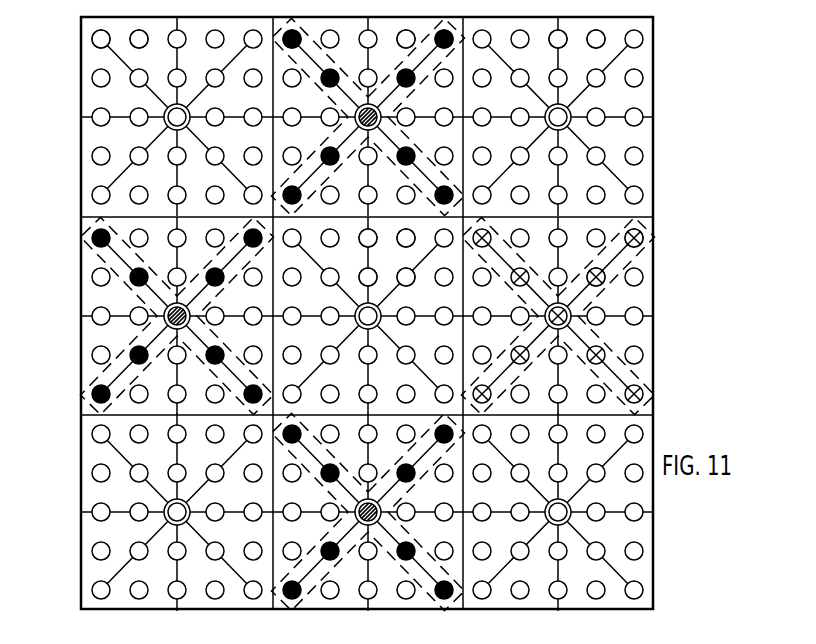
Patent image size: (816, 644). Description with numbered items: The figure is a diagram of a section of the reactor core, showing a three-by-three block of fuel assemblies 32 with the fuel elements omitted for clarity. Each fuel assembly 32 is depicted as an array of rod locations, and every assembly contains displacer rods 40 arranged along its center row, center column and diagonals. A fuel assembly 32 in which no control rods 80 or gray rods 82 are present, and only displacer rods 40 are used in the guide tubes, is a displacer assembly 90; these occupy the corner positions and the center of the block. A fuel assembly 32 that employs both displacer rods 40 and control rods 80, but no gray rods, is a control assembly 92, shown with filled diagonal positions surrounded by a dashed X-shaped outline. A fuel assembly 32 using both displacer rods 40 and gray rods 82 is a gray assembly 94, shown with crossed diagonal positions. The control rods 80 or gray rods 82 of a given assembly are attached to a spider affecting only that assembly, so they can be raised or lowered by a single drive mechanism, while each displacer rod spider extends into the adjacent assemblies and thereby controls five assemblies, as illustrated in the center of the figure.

The fuel assembly 32 is at (280, 14).
The displacer rod 40 is at (140, 30).
The control rod 80 is at (296, 31).
The gray rod 82 is at (600, 274).
The displacer assembly 90 is at (77, 97).
The control assembly 92 is at (385, 23).
The gray assembly 94 is at (657, 356).